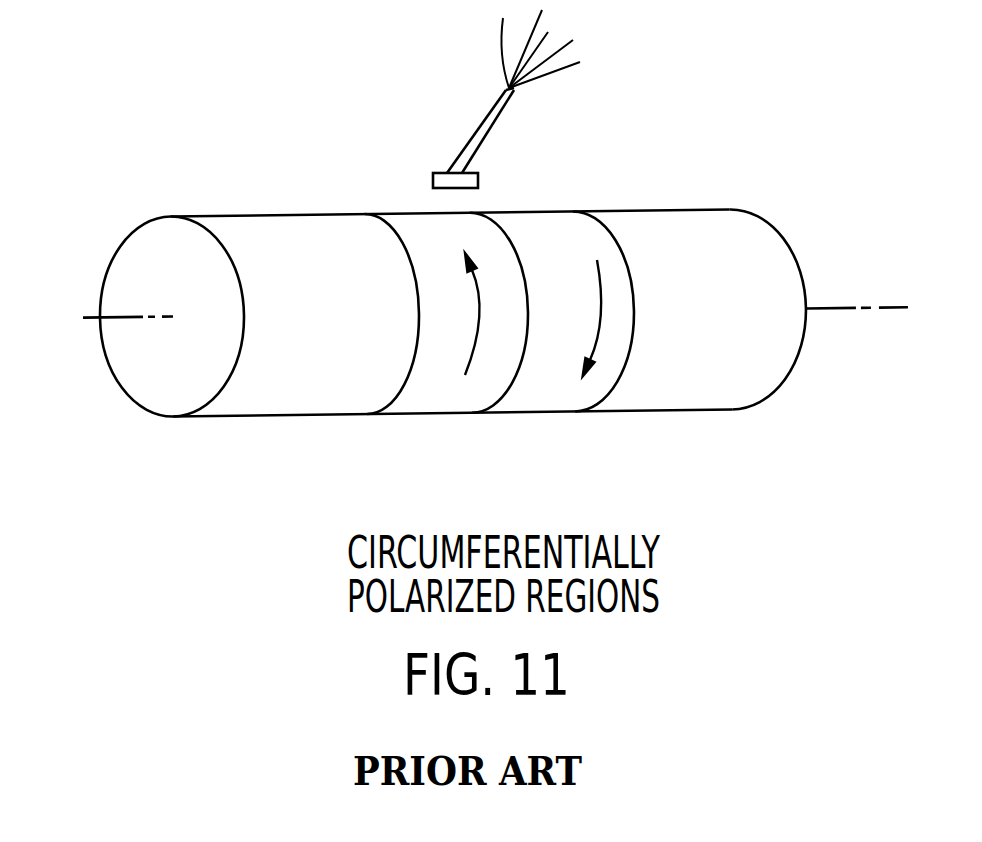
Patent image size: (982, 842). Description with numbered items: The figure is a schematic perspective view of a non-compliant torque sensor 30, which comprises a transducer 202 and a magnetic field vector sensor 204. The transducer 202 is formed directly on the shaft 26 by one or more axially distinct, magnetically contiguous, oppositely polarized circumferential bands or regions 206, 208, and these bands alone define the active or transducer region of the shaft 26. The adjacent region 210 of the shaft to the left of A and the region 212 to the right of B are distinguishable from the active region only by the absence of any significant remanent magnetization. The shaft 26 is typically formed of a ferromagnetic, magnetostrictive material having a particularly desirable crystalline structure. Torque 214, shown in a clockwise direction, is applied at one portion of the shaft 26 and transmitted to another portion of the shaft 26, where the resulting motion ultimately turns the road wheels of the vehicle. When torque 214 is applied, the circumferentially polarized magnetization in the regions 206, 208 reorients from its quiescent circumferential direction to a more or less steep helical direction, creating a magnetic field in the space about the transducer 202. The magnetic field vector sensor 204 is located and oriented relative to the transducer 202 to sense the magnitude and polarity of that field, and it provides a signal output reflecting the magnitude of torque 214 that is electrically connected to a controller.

The non-compliant torque sensor 30 is at (341, 170).
The shaft 26 is at (768, 380).
The torque 214 is at (238, 245).
The region of the shaft 210 is at (293, 240).
The oppositely polarized circumferential band or region 206 is at (410, 225).
The transducer 202 is at (596, 320).
The oppositely polarized circumferential band or region 208 is at (540, 390).
The region of the shaft 212 is at (755, 245).
The magnetic field vector sensor 204 is at (445, 173).